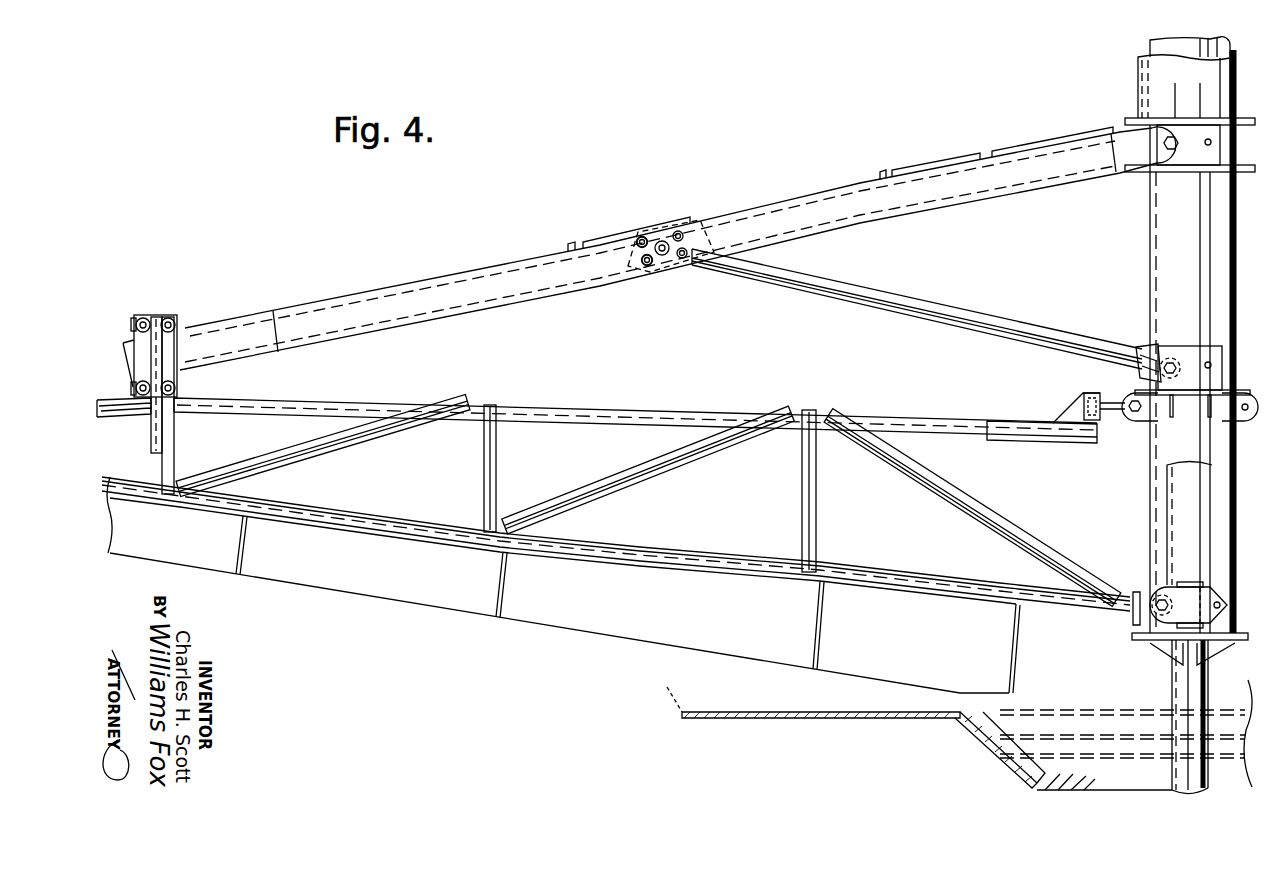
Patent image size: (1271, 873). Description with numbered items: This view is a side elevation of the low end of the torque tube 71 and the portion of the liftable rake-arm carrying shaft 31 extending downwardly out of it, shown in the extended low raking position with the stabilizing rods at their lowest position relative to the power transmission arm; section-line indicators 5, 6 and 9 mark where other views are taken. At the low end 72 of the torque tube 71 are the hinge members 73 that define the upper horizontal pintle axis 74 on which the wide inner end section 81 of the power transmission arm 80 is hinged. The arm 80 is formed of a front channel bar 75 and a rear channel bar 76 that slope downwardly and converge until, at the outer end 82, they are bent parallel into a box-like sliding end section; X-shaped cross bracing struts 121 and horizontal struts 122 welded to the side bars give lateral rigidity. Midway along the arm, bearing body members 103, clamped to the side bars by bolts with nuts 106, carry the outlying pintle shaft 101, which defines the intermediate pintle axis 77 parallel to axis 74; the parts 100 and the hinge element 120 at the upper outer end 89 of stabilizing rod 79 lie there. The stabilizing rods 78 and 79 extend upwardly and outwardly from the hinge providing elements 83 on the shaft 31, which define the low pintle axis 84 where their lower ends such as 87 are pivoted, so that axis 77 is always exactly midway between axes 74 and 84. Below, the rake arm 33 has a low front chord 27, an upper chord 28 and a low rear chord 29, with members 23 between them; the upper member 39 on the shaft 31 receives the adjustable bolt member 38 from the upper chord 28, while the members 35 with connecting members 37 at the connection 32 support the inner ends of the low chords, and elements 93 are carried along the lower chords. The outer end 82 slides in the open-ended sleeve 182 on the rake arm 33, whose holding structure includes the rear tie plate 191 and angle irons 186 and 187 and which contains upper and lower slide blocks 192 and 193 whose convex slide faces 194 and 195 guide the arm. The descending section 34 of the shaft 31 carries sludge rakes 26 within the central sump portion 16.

The section line 5- 5 is at (1010, 388).
The section line 6- 6 is at (140, 33).
The section line 9- 9 is at (1112, 60).
The central sump portion 16 is at (997, 742).
The diagonal brace 23 is at (477, 460).
The sludge rakes 26 is at (1008, 727).
The low front chordal member 27 is at (778, 562).
The upper chordal member 28 is at (792, 430).
The low rear chordal member 29 is at (648, 543).
The liftable shaft 31 is at (1147, 257).
The pivot bracket assembly 32 is at (1112, 560).
The rake arm 33 is at (616, 502).
The descending section of shaft 34 is at (1172, 693).
The forwardly-extending set of members 35 is at (1094, 522).
The connecting members 37 is at (1165, 596).
The adjustable bolt member 38 is at (1120, 403).
The upper member 39 is at (1132, 419).
The torque tube 71 is at (1122, 100).
The low end of torque tube 72 is at (1134, 110).
The hinge members 73 is at (1193, 135).
The upper pintle axis 74 is at (1209, 148).
The front channel bar 75 is at (388, 287).
The rear channel bar 76 is at (461, 271).
The outlying pintle axial line 77 is at (662, 257).
The stabilizing rod 78 is at (950, 304).
The stabilizing rod 79 is at (1018, 322).
The power transmission arm 80 is at (232, 292).
The inner end section 81 is at (1083, 151).
The outer end section 82 is at (190, 328).
The hinge providing elements 83 is at (1192, 383).
The low pintle axis 84 is at (1207, 362).
The lower end of stabilizing rod 87 is at (1142, 348).
The upper outer end of stabilizing rod 89 is at (693, 265).
The side plate 93 is at (277, 582).
The bolt 100 is at (667, 176).
The outlying pintle shaft 101 is at (660, 240).
The bearing body members 103 is at (638, 257).
The nuts 106 is at (640, 237).
The hinge element 120 is at (672, 262).
The X-shaped cross bracing struts 121 is at (738, 202).
The horizontal struts 122 is at (572, 242).
The open-ended sleeve 182 is at (130, 311).
The angle iron 186 is at (168, 423).
The angle iron 187 is at (170, 460).
The rear tie plate 191 is at (150, 433).
The upper slide block 192 is at (178, 315).
The lower slide block 193 is at (135, 387).
The lower slide face 194 is at (137, 333).
The upper slide face 195 is at (180, 377).